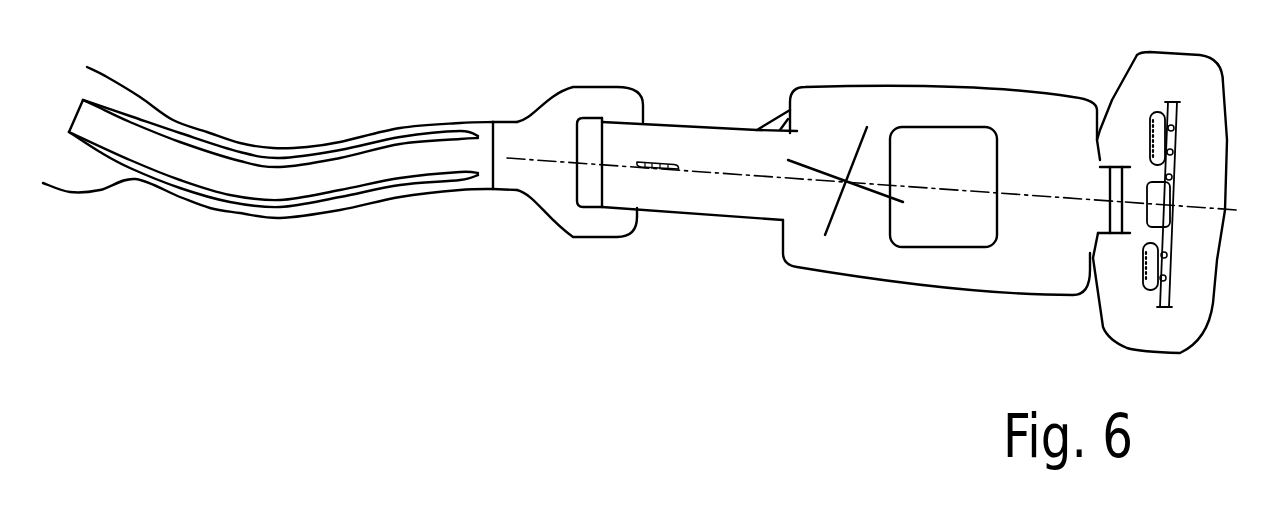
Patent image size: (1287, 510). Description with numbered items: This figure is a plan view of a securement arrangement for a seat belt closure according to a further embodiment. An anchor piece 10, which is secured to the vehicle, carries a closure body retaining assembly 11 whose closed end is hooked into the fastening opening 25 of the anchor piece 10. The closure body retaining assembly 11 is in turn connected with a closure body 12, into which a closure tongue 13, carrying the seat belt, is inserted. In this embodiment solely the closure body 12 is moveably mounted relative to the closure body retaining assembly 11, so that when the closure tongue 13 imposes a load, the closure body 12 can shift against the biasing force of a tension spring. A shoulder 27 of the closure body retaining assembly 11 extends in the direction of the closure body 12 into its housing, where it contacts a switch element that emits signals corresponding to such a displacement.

The anchor piece 10 is at (517, 175).
The fastening opening 25 is at (585, 193).
The closure body retaining assembly 11 is at (725, 193).
The closure body 12 is at (933, 265).
The closure tongue 13 is at (1190, 290).
The shoulder 27 is at (767, 509).